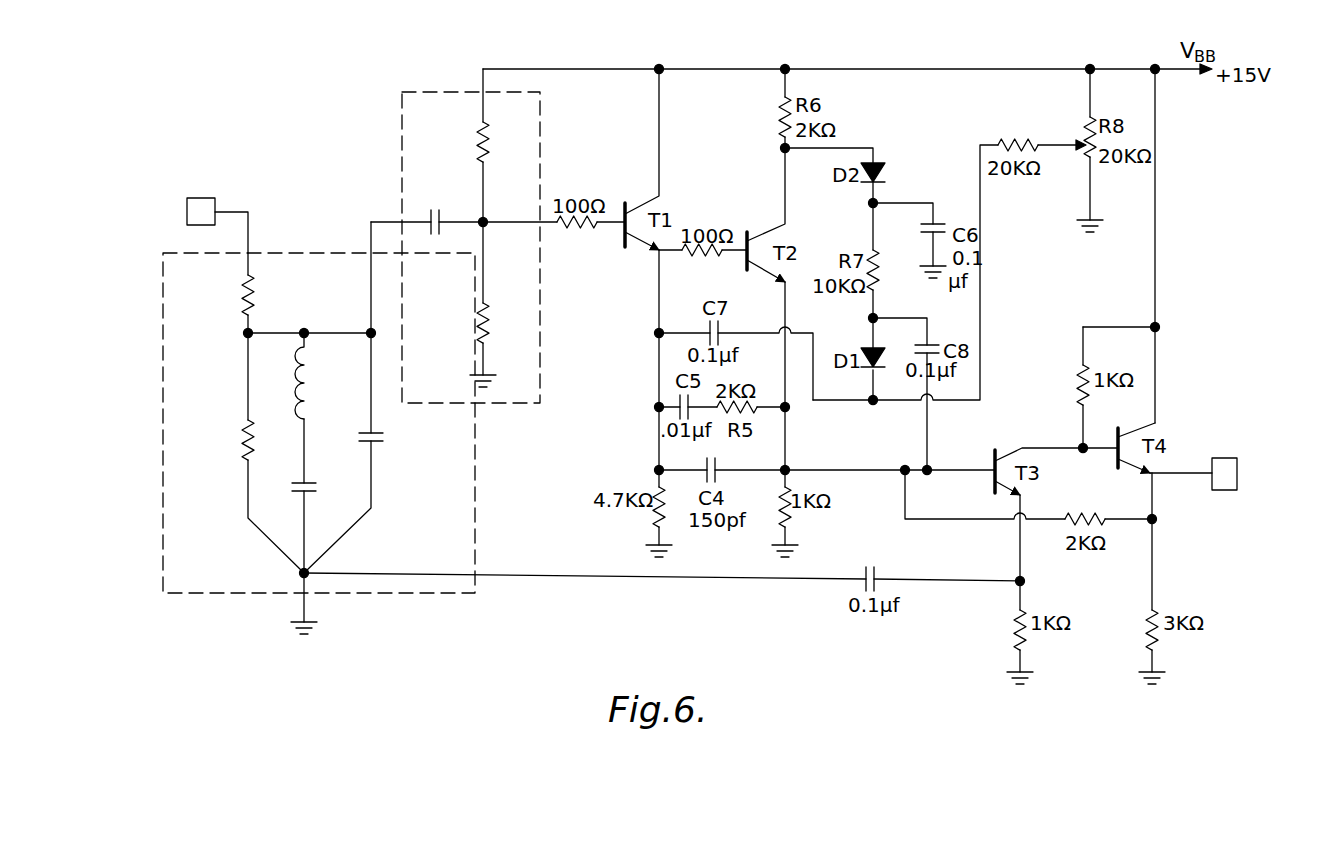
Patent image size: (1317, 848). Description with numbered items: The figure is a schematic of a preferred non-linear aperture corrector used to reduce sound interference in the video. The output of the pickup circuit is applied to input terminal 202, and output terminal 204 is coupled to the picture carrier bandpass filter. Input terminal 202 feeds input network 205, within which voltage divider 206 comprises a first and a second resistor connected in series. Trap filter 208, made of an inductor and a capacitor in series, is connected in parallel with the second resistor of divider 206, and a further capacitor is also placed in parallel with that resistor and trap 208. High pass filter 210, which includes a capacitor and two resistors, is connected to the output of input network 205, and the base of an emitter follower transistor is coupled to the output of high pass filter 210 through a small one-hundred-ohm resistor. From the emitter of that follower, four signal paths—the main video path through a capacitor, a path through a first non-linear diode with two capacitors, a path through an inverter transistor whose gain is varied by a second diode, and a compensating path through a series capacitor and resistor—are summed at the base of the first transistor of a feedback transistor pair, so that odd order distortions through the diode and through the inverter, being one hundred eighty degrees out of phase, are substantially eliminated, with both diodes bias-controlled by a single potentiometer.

The input terminal 202 is at (187, 210).
The output terminal 204 is at (1237, 474).
The input network 205 is at (289, 428).
The voltage divider 206 is at (248, 380).
The trap filter 208 is at (304, 440).
The high pass filter 210 is at (402, 140).